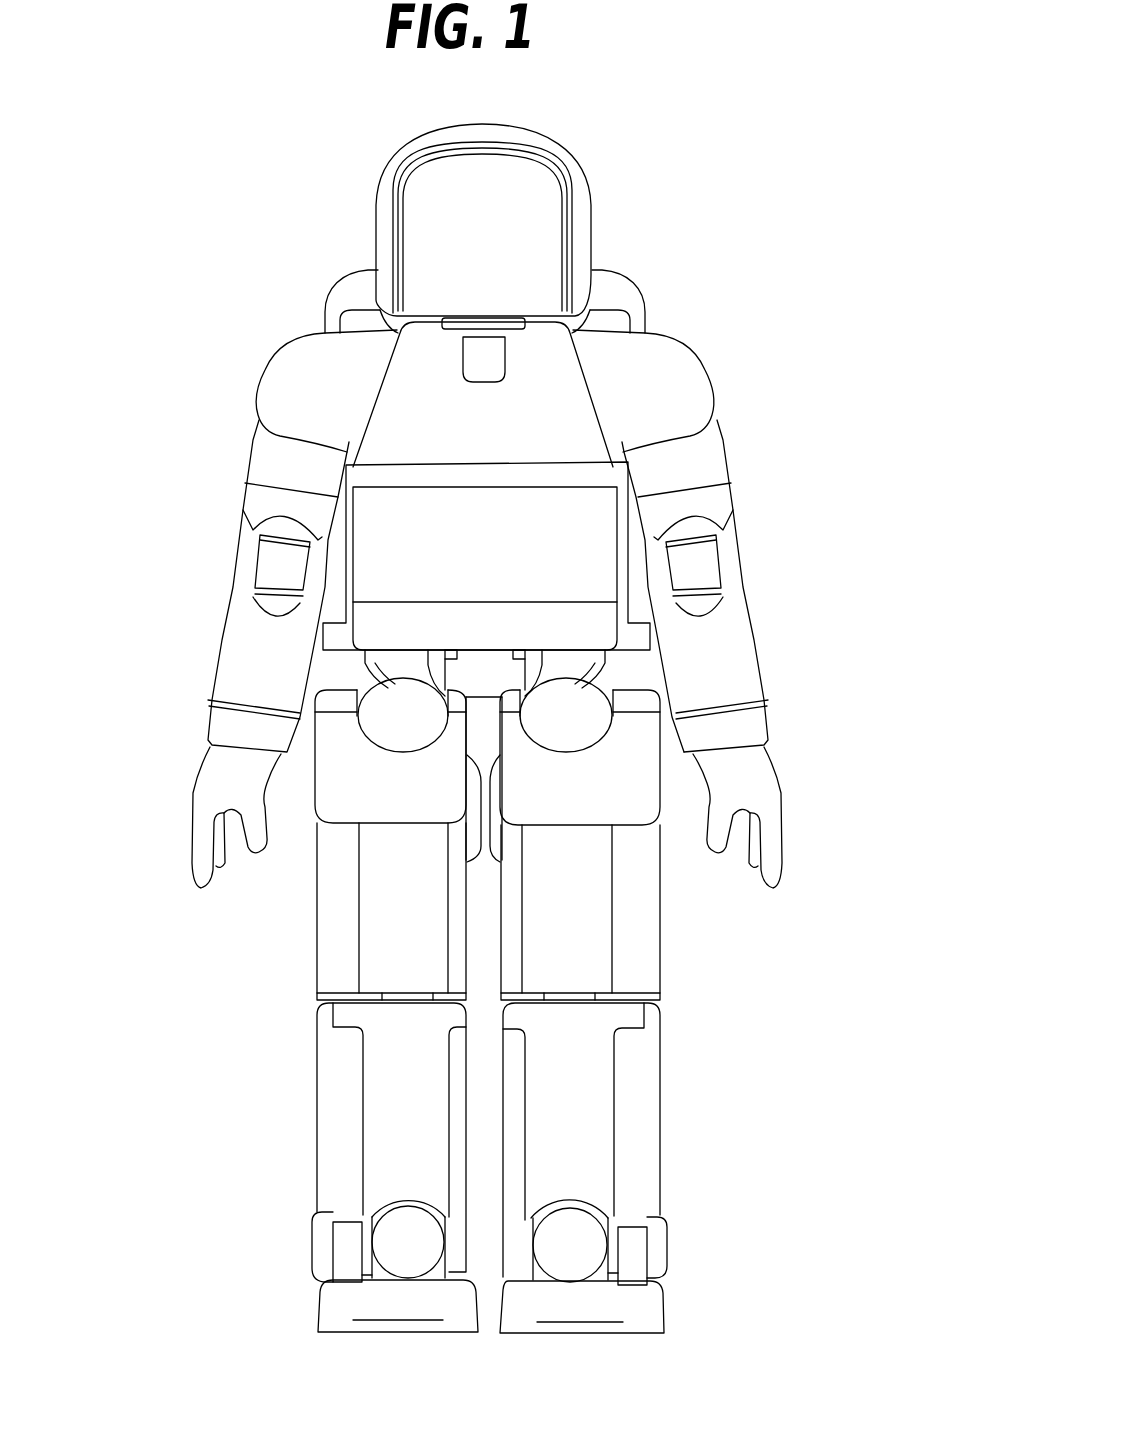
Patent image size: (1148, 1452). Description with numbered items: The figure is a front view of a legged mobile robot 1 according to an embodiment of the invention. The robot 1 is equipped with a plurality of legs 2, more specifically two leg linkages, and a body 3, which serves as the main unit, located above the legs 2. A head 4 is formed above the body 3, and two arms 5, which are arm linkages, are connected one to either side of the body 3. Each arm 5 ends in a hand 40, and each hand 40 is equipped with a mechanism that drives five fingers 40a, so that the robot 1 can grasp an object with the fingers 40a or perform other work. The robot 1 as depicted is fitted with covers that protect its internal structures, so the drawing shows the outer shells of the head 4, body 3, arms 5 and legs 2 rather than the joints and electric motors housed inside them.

The legged mobile robot 1 is at (646, 245).
The leg 2 is at (295, 998).
The body 3 is at (598, 576).
The head 4 is at (568, 152).
The arm 5 is at (228, 430).
The hand 40 is at (200, 773).
The finger 40a is at (786, 839).